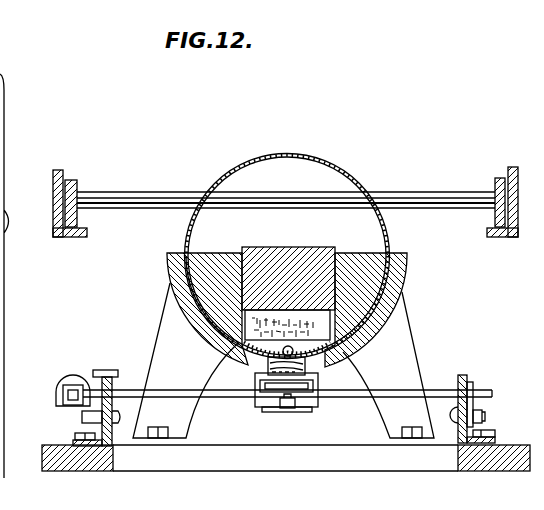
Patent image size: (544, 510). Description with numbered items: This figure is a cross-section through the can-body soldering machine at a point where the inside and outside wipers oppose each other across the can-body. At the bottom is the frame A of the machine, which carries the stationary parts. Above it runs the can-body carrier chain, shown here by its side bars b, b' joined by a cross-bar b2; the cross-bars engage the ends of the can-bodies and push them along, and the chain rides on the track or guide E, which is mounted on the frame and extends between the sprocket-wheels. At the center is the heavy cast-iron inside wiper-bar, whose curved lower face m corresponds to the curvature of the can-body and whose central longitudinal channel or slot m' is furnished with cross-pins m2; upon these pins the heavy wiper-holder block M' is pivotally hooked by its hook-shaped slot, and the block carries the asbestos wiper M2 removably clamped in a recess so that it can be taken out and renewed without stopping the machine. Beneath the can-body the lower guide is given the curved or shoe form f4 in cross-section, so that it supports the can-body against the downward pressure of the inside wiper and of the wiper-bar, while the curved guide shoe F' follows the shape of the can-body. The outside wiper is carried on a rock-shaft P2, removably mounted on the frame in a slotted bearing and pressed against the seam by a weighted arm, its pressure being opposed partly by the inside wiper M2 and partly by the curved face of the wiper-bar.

The chain track or guide E is at (487, 231).
The side bar b is at (88, 199).
The side bar b' is at (478, 195).
The cross-bar b2 is at (392, 197).
The curved or shoe form of lower guide f4 is at (438, 298).
The wiper-holder block M' is at (288, 279).
The curved lower face m is at (261, 256).
The cross-pin m2 is at (243, 262).
The wiper M2 is at (213, 348).
The frame legs F' is at (276, 360).
The central longitudinal channel or slot m' is at (268, 384).
The rock-shaft P2 is at (356, 396).
The frame A is at (124, 472).